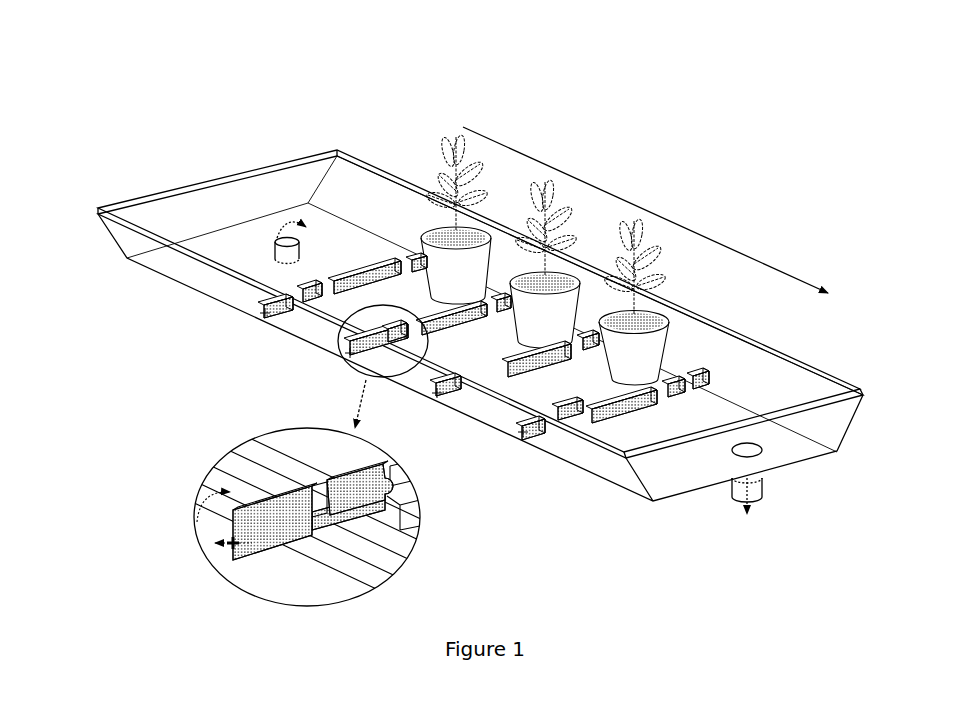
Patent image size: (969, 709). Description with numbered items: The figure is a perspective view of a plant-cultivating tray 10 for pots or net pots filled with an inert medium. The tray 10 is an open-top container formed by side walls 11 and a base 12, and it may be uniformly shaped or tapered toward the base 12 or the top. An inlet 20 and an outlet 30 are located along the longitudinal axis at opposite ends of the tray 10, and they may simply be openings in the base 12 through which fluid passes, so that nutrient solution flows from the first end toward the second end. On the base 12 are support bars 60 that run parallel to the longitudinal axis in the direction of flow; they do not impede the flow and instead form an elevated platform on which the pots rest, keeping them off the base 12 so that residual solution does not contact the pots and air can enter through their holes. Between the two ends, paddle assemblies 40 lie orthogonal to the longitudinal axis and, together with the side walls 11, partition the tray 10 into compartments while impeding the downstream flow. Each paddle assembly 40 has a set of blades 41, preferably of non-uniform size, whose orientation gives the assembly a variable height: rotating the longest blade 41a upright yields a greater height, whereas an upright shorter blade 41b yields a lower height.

The tray 10 is at (206, 93).
The side walls 11 is at (152, 203).
The base 12 is at (327, 223).
The support bars 60 is at (386, 202).
The inlet 20 is at (286, 254).
The outlet 30 is at (770, 486).
The paddle assemblies 40 is at (541, 427).
The blades 41 is at (66, 572).
The longest blade 41a is at (233, 525).
The shorter blade 41b is at (233, 557).